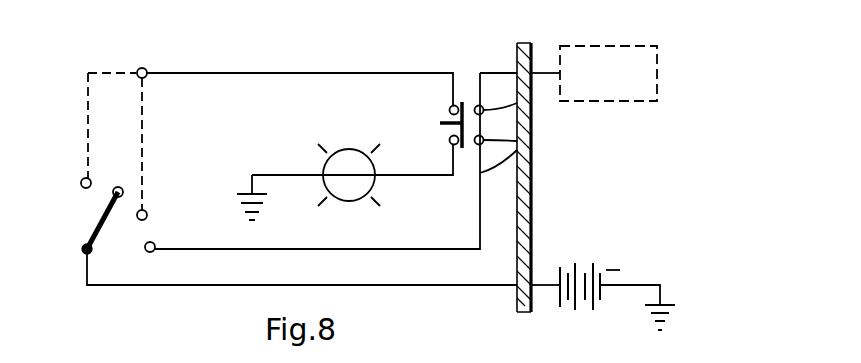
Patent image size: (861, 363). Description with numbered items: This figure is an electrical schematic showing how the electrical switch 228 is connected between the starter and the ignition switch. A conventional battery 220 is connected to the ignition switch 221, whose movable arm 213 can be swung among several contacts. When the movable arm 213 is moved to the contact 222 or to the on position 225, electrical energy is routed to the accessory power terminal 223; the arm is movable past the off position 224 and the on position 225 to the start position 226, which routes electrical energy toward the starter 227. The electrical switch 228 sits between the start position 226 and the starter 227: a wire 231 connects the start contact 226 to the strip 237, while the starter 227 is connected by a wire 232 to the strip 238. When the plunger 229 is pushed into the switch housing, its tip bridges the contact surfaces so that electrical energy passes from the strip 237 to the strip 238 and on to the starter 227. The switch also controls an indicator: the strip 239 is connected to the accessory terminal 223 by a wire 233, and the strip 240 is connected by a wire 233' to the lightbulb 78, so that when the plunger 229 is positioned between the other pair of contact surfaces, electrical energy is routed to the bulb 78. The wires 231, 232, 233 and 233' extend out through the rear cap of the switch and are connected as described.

The lightbulb 78 is at (342, 158).
The movable arm 213 is at (100, 219).
The battery 220 is at (560, 302).
The ignition switch 221 is at (65, 233).
The contact 222 is at (84, 177).
The accessory power terminal 223 is at (163, 40).
The off position 224 is at (113, 187).
The on position 225 is at (146, 210).
The start position 226 is at (155, 243).
The starter 227 is at (658, 64).
The electrical switch 228 is at (462, 153).
The plunger 229 is at (448, 110).
The wire 231 is at (531, 150).
The wire 232 is at (478, 86).
The wire 233 is at (425, 57).
The wire 233' is at (427, 152).
The strip 237 is at (531, 143).
The strip 238 is at (531, 103).
The strip 239 is at (450, 107).
The strip 240 is at (440, 123).